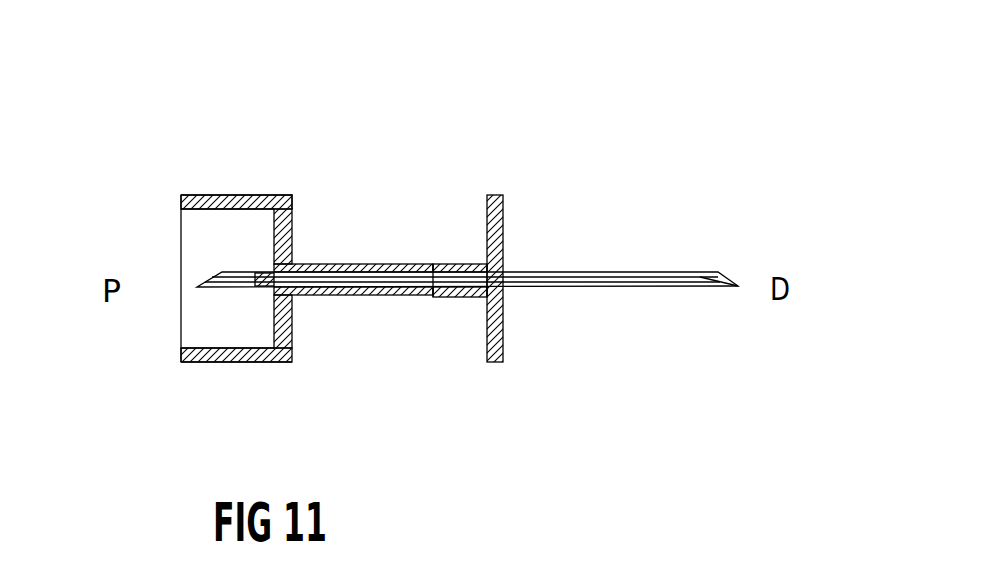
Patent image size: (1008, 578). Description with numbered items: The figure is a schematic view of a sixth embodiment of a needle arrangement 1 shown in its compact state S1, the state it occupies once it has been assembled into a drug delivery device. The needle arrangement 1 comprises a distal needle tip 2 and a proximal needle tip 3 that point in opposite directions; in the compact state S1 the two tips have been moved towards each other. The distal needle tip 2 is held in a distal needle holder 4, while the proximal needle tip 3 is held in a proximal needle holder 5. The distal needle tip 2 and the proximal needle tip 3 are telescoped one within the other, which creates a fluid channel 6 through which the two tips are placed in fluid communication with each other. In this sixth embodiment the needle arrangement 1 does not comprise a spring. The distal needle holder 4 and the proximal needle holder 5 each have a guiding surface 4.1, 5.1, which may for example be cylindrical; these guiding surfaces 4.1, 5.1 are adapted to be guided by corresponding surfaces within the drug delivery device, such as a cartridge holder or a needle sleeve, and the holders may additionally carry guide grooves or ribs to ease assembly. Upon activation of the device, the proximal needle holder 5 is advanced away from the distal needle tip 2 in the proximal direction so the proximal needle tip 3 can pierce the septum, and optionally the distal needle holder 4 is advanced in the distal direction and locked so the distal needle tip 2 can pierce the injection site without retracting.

The needle arrangement 1 is at (240, 128).
The distal needle tip 2 is at (715, 280).
The proximal needle tip 3 is at (198, 285).
The distal needle holder 4 is at (493, 296).
The guiding surface 4.1 is at (494, 195).
The proximal needle holder 5 is at (283, 322).
The guiding surface 5.1 is at (262, 195).
The fluid channel 6 is at (383, 296).
The compact state S1 is at (168, 168).